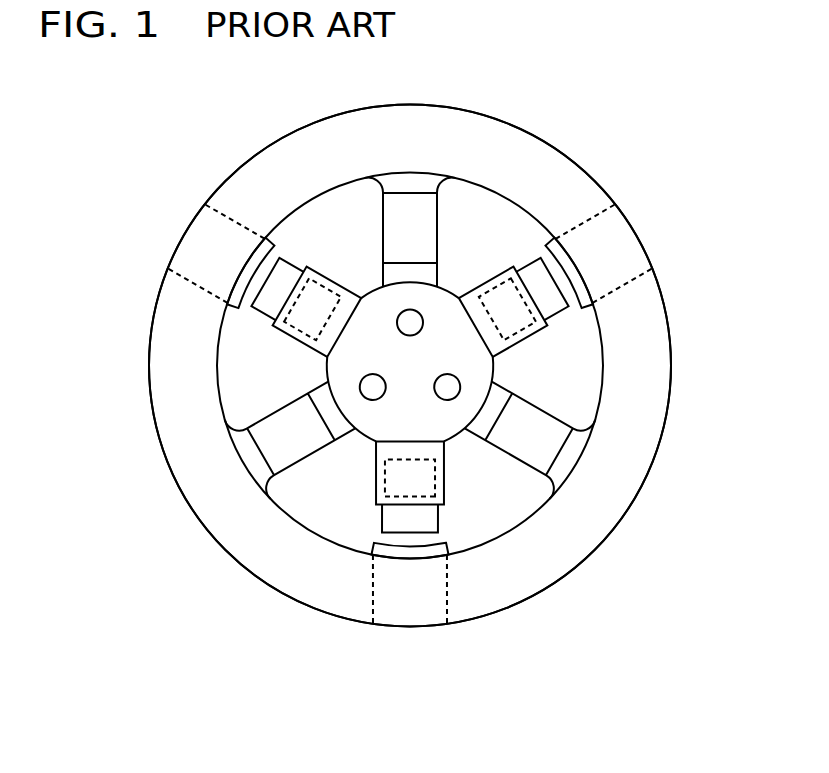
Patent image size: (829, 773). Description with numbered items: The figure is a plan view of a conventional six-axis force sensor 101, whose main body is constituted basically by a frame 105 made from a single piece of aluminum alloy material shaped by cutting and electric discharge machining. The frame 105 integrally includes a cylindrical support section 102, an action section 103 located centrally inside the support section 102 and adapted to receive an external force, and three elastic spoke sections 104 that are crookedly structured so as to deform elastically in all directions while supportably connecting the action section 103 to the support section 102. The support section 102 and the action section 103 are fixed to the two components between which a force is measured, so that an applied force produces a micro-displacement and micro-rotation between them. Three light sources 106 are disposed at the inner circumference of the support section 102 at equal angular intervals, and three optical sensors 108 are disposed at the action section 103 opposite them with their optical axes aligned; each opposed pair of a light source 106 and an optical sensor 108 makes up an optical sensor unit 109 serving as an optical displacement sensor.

The six-axis force sensor 101 is at (636, 167).
The support section 102 is at (583, 549).
The action section 103 is at (493, 363).
The elastic spoke sections 104 is at (438, 232).
The frame 105 is at (672, 377).
The light sources 106 is at (550, 241).
The optical sensors 108 is at (292, 264).
The optical sensor unit 109 is at (526, 243).